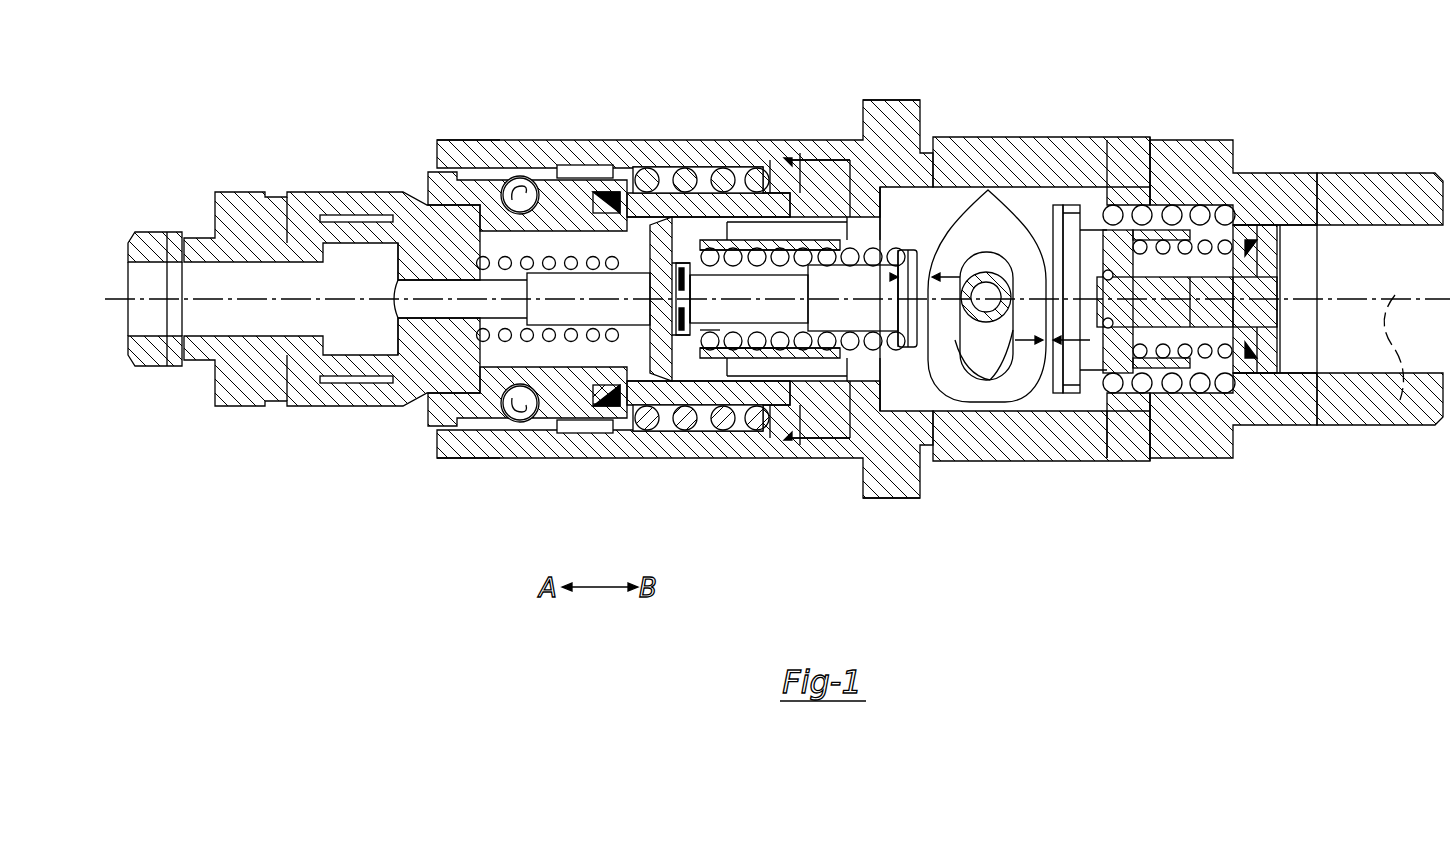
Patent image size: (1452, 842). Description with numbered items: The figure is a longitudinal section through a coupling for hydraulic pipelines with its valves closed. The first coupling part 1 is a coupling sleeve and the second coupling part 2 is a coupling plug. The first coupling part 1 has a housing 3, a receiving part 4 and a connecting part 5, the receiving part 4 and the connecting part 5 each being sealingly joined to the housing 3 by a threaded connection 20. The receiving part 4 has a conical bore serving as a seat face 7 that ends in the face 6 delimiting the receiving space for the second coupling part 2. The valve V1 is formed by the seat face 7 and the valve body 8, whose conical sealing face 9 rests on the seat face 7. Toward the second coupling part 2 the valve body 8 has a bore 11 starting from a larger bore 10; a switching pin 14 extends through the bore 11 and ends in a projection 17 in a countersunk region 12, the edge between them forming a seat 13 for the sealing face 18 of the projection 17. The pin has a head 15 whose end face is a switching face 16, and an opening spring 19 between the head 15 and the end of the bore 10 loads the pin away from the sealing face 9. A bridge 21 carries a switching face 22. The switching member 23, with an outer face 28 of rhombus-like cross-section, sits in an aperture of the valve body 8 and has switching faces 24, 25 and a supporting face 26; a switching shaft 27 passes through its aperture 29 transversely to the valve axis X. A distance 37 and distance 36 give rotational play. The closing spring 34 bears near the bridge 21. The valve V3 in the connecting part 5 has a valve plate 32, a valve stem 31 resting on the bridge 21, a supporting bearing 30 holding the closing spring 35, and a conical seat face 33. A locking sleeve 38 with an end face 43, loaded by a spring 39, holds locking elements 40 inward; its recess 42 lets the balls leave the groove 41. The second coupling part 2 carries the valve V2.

The first coupling part 1 is at (995, 137).
The second coupling part 2 is at (393, 395).
The housing 3 is at (1047, 137).
The receiving part 4 is at (690, 205).
The connecting part 5 is at (1230, 235).
The face 6 is at (675, 400).
The seat face 7 is at (700, 360).
The valve body 8 is at (777, 160).
The sealing face 9 is at (690, 380).
The bore 10 is at (760, 355).
The bore 11 is at (712, 355).
The countersunk region 12 is at (655, 400).
The seat 13 is at (580, 315).
The switching pin 14 is at (844, 320).
The head 15 is at (900, 385).
The switching face 16 is at (908, 345).
The projection 17 is at (732, 309).
The sealing face 18 is at (742, 200).
The opening spring 19 is at (770, 360).
The threaded connection 20 is at (783, 182).
The bridge 21 is at (1150, 455).
The switching face 22 is at (1113, 450).
The switching member 23 is at (975, 230).
The switching face 24 is at (940, 215).
The switching face 25 is at (1058, 215).
The supporting face 26 is at (985, 380).
The switching shaft 27 is at (1060, 393).
The outer face 28 is at (965, 402).
The aperture 29 is at (1070, 400).
The supporting bearing 30 is at (1118, 360).
The valve stem 31 is at (1230, 370).
The valve plate 32 is at (1245, 360).
The seat face 33 is at (1290, 215).
The closing spring 34 is at (1155, 205).
The closing spring 35 is at (1235, 240).
The distance 36 is at (927, 262).
The distance 37 is at (1050, 325).
The locking sleeve 38 is at (600, 145).
The spring 39 is at (625, 185).
The locking elements 40 is at (519, 178).
The groove 41 is at (492, 140).
The recess 42 is at (575, 155).
The end face 43 is at (930, 470).
The valve V1 is at (735, 355).
The valve V2 is at (600, 440).
The valve V3 is at (1255, 330).
The valve axis X is at (1400, 400).